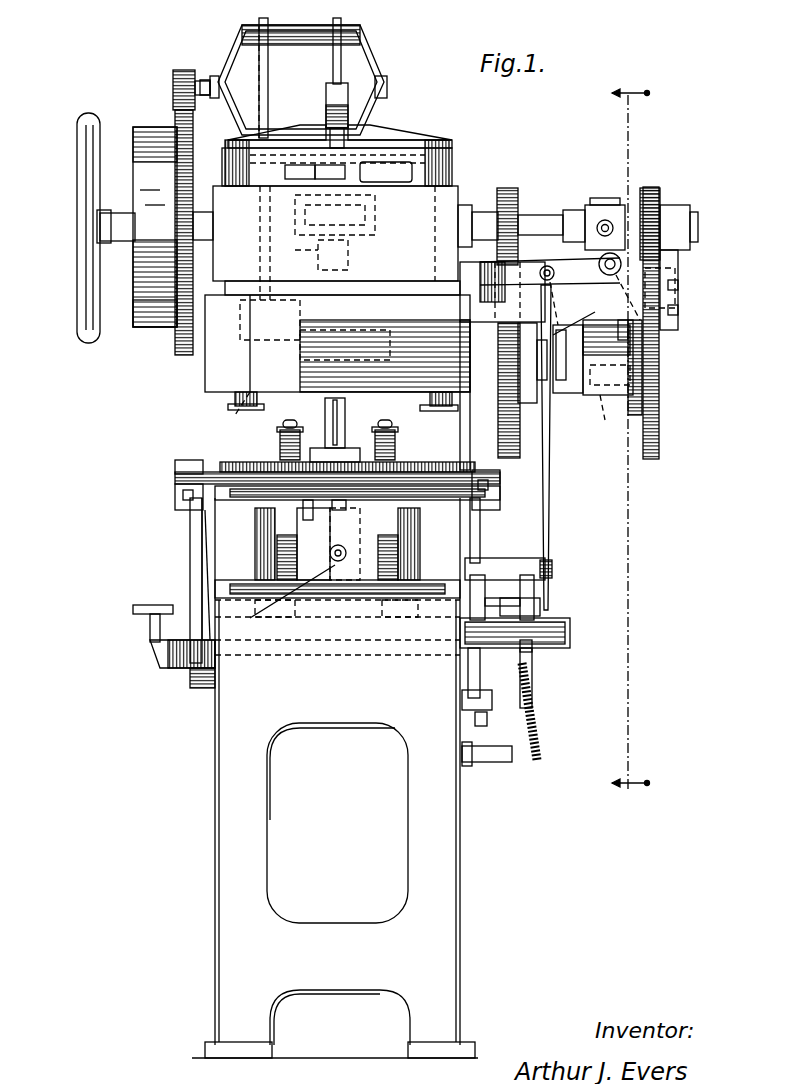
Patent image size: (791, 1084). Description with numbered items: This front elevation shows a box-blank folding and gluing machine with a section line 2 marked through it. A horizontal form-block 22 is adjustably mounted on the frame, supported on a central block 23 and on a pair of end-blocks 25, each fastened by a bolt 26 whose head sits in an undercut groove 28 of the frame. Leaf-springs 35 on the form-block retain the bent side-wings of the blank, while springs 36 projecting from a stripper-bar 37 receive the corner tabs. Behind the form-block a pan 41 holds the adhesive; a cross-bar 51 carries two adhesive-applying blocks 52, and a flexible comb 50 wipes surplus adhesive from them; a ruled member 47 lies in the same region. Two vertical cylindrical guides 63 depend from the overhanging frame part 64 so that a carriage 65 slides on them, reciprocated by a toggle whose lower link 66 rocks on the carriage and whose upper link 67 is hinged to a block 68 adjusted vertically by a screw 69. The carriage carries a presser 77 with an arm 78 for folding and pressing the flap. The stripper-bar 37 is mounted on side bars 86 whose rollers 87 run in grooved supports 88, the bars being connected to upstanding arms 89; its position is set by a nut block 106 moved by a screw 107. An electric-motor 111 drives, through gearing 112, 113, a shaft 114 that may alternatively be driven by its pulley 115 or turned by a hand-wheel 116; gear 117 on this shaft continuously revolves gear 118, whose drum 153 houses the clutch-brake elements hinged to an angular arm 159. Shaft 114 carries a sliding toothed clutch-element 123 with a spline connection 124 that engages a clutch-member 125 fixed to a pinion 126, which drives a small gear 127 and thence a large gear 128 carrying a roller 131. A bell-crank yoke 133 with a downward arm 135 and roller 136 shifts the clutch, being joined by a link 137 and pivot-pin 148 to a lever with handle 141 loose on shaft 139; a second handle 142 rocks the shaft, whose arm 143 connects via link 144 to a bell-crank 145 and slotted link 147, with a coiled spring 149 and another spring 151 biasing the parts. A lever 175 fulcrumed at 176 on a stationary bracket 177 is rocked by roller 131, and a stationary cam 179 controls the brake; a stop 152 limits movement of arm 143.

The section line 2 is at (632, 427).
The form-block 22 is at (313, 540).
The central block 23 is at (330, 540).
The end-blocks 25 is at (285, 535).
The bolt 26 is at (420, 548).
The undercut groove 28 is at (415, 655).
The leaf-springs 35 is at (258, 500).
The springs 36 is at (230, 464).
The stripper-bar 37 is at (220, 474).
The pan 41 is at (485, 540).
The ruled slide 47 is at (385, 356).
The flexible comb 50 is at (178, 468).
The cross-bar 51 is at (420, 445).
The adhesive-applying blocks 52 is at (283, 435).
The cylindrical guides 63 is at (235, 400).
The overhanging part of the frame 64 is at (342, 243).
The carriage 65 is at (205, 404).
The lower toggle link 66 is at (330, 312).
The upper toggle link 67 is at (382, 240).
The block 68 is at (355, 190).
The screw 69 is at (348, 108).
The presser 77 is at (205, 362).
The arm 78 is at (385, 280).
The side bars 86 is at (192, 520).
The rollers 87 is at (185, 498).
The supports 88 is at (175, 492).
The upstanding arms 89 is at (198, 575).
The nut block 106 is at (337, 602).
The screw 107 is at (355, 520).
The electric-motor 111 is at (326, 83).
The gearing 112 is at (183, 70).
The gearing 113 is at (176, 118).
The shaft 114 is at (125, 210).
The pulley 115 is at (150, 330).
The hand-wheel 116 is at (78, 316).
The gear 117 is at (508, 188).
The gear 118 is at (520, 440).
The sliding toothed clutch-element 123 is at (612, 205).
The key or spline connection 124 is at (575, 210).
The toothed clutch-member 125 is at (650, 188).
The pinion 126 is at (670, 205).
The small gear 127 is at (678, 255).
The large gear 128 is at (660, 410).
The roller 131 is at (590, 290).
The bell-crank yoke 133 is at (555, 262).
The arm 135 is at (678, 277).
The roller 136 is at (660, 325).
The link 137 is at (548, 470).
The shaft 139 is at (350, 655).
The handle 141 is at (540, 605).
The handle 142 is at (150, 642).
The arm 143 is at (532, 680).
The link 144 is at (520, 598).
The bell-crank 145 is at (490, 580).
The slotted link 147 is at (548, 625).
The pivot-pin 148 is at (570, 650).
The coiled contractile spring 149 is at (540, 720).
The spring 151 is at (492, 762).
The stop 152 is at (460, 693).
The drum or flange 153 is at (525, 400).
The angular arm 159 is at (563, 379).
The lever 175 is at (660, 345).
The fulcrum 176 is at (612, 415).
The stationary bracket 177 is at (660, 355).
The stationary cam 179 is at (586, 318).